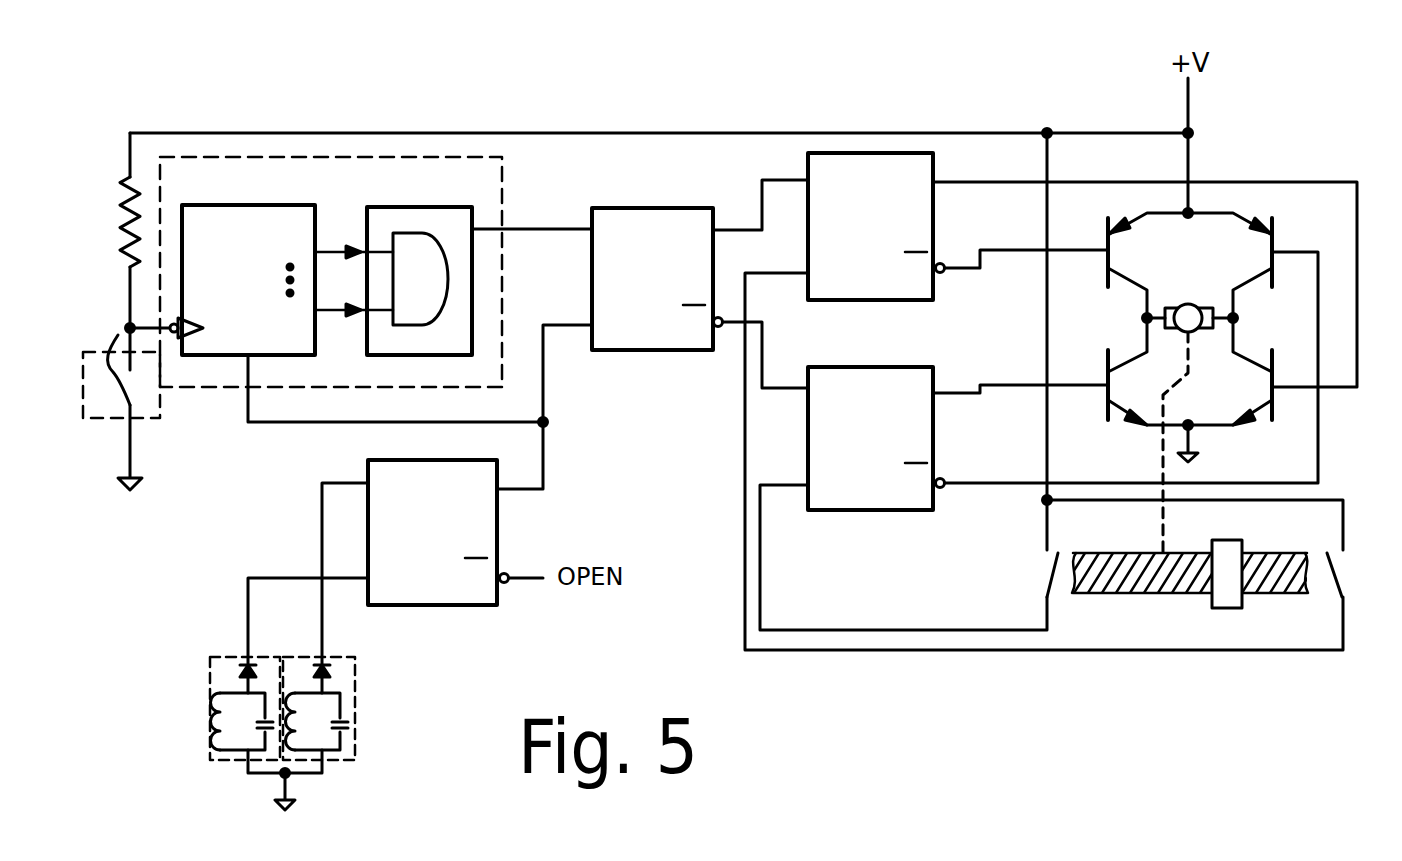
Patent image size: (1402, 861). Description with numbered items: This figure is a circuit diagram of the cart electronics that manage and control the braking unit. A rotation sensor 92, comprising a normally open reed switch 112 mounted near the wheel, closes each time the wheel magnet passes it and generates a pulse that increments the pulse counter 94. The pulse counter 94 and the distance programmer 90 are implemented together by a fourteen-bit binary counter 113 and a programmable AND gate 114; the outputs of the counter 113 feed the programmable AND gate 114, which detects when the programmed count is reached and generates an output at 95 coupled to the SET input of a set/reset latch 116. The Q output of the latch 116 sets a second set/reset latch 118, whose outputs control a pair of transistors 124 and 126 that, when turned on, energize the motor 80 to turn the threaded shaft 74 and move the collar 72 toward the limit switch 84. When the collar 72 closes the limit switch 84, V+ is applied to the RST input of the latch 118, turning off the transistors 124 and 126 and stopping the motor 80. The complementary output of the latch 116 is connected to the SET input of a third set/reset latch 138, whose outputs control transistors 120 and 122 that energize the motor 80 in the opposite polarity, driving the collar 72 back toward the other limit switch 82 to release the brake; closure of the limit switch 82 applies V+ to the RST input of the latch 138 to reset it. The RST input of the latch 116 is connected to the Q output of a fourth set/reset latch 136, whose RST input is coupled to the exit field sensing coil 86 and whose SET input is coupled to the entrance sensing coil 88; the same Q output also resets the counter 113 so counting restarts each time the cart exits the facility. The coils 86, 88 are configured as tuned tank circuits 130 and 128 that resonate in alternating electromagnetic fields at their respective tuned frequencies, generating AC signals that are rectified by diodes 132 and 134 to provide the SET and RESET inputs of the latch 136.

The collar 72 is at (1232, 608).
The threaded shaft 74 is at (1185, 595).
The motor 80 is at (1188, 305).
The limit switch 82 is at (1045, 572).
The limit switch 84 is at (1343, 578).
The exit field sensing coil 86 is at (355, 725).
The entrance sensing coil 88 is at (210, 725).
The distance programmer 90 is at (331, 289).
The rotation sensor 92 is at (147, 418).
The pulse counter 94 is at (310, 387).
The output 95 is at (528, 229).
The reed switch 112 is at (121, 346).
The 14-bit binary counter 113 is at (255, 205).
The programmable AND gate 114 is at (437, 207).
The set/reset latch 116 is at (645, 350).
The set/reset latch 118 is at (806, 166).
The transistor 120 is at (1275, 228).
The transistor 122 is at (1105, 405).
The transistor 124 is at (1108, 226).
The transistor 126 is at (1272, 405).
The tank circuit 128 is at (225, 748).
The tank circuit 130 is at (335, 750).
The diode 132 is at (330, 663).
The diode 134 is at (240, 665).
The set/reset latch 136 is at (465, 605).
The set/reset latch 138 is at (878, 510).